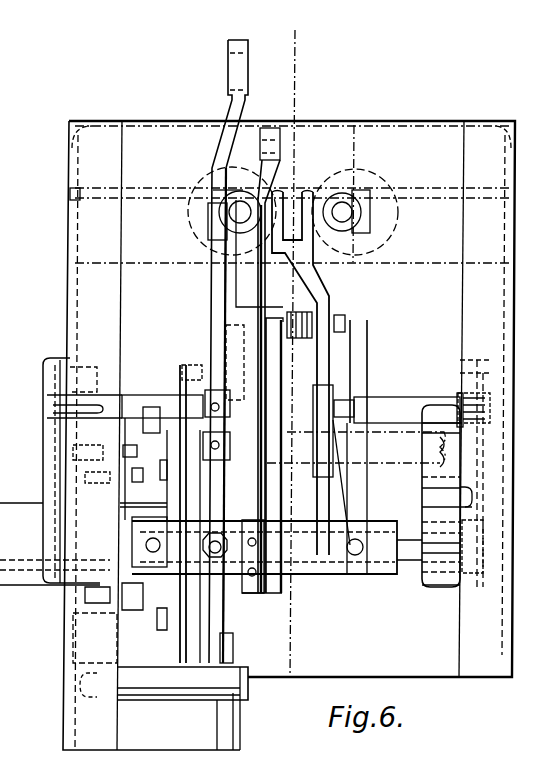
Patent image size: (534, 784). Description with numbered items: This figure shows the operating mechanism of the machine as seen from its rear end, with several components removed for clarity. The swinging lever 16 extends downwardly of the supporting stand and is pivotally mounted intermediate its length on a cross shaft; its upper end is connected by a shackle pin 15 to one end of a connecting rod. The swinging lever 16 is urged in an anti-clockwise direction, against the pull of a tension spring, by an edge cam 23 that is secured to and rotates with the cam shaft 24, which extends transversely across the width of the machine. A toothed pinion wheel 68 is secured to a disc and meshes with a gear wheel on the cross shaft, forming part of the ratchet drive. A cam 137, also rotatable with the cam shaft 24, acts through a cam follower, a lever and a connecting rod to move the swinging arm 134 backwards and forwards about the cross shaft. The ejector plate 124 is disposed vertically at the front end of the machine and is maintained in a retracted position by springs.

The ejector plate 124 is at (257, 390).
The swinging lever 16 is at (248, 78).
The toothed pinion wheel 68 is at (278, 142).
The swinging arm 134 is at (325, 302).
The edge cam 23 is at (237, 357).
The cam 137 is at (359, 369).
The shackle pin 15 is at (270, 502).
The cam shaft 24 is at (394, 453).